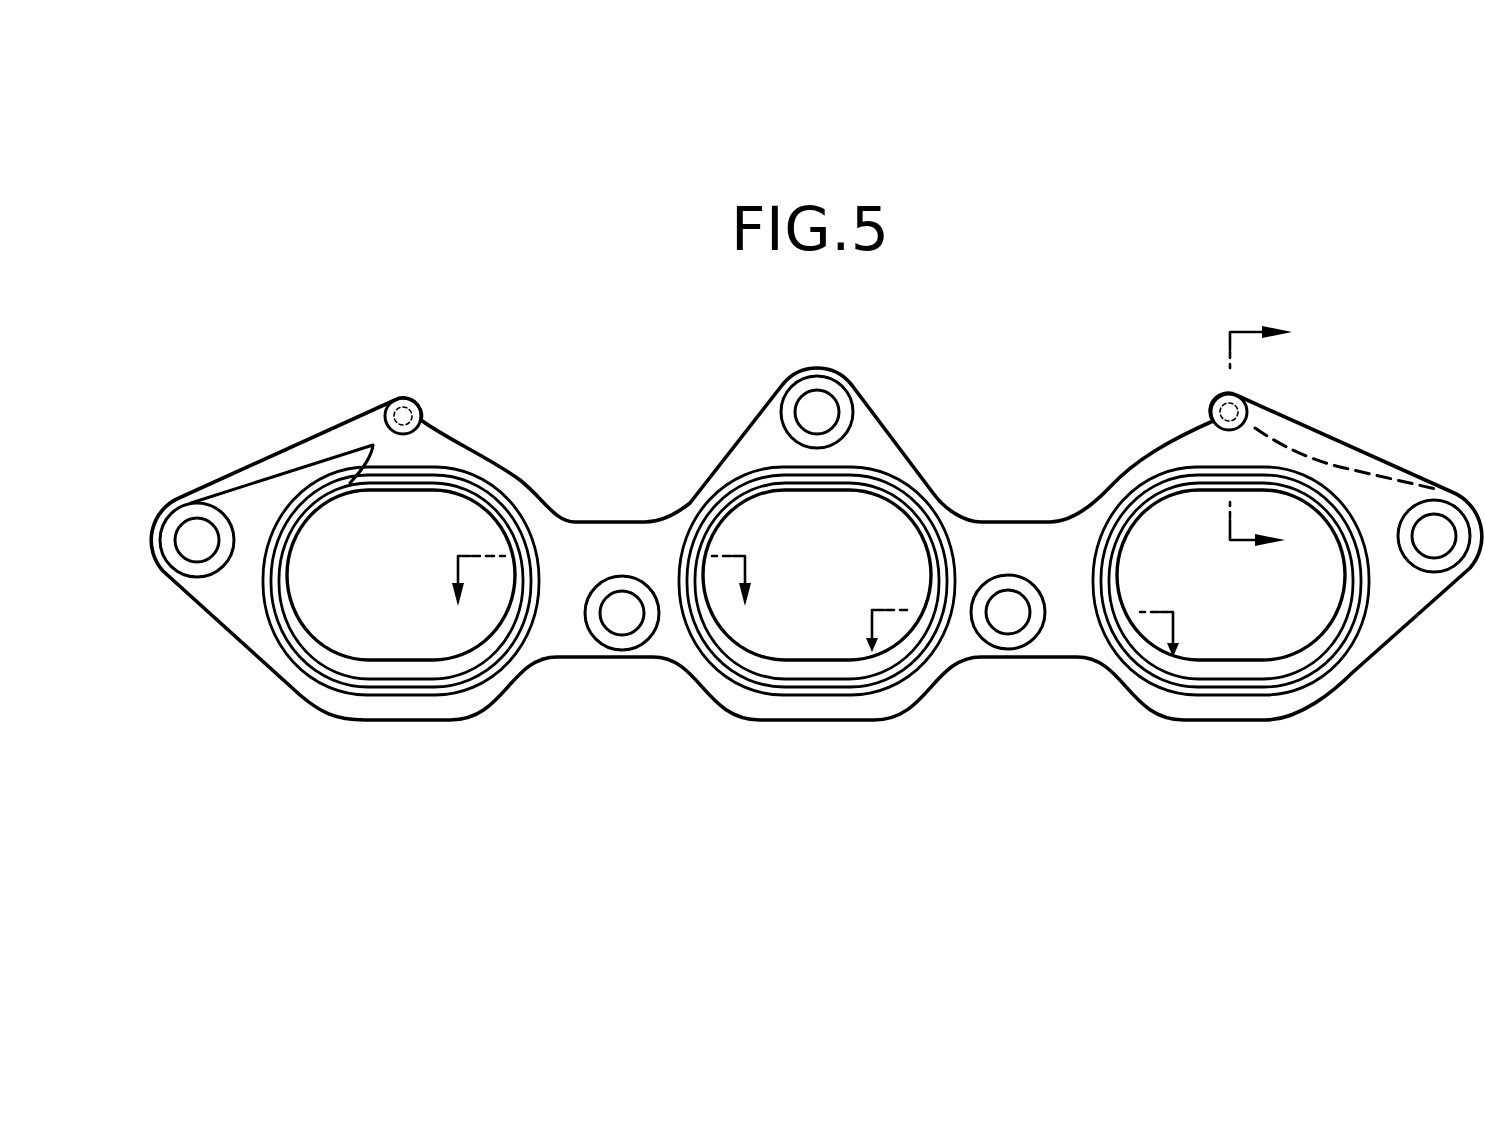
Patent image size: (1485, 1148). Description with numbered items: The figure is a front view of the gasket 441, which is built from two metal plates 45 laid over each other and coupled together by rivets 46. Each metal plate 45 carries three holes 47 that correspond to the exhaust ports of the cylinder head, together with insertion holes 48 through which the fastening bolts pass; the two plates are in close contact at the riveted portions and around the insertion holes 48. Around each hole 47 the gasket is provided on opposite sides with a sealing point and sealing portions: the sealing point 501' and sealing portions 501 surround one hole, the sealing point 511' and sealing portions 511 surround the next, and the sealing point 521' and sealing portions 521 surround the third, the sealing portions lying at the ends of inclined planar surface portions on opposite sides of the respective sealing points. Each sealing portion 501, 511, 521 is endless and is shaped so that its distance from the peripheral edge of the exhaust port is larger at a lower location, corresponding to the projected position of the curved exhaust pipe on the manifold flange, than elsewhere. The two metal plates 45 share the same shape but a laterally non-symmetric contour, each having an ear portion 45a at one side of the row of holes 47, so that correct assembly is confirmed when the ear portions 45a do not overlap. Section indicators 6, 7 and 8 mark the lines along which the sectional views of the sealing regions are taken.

The gasket 441 is at (816, 553).
The metal plate 45 is at (887, 452).
The ear portion 45a is at (353, 425).
The rivet 46 is at (412, 402).
The hole 47 is at (460, 512).
The insertion hole 48 is at (196, 530).
The sealing portion 501 is at (1241, 523).
The sealing point 501' is at (1231, 644).
The sealing portion 511 is at (795, 530).
The sealing point 511' is at (817, 638).
The sealing portion 521 is at (397, 525).
The sealing point 521' is at (401, 644).
The section line VI-VI 6 is at (1236, 433).
The section line VII-VII 7 is at (1029, 621).
The section line VIII-VIII 8 is at (604, 560).